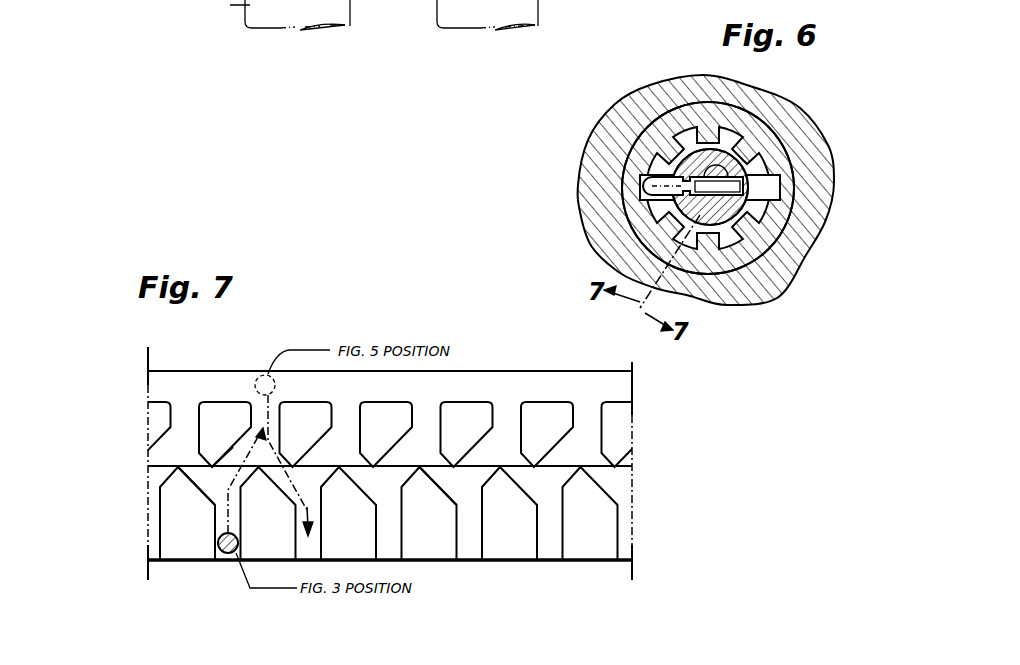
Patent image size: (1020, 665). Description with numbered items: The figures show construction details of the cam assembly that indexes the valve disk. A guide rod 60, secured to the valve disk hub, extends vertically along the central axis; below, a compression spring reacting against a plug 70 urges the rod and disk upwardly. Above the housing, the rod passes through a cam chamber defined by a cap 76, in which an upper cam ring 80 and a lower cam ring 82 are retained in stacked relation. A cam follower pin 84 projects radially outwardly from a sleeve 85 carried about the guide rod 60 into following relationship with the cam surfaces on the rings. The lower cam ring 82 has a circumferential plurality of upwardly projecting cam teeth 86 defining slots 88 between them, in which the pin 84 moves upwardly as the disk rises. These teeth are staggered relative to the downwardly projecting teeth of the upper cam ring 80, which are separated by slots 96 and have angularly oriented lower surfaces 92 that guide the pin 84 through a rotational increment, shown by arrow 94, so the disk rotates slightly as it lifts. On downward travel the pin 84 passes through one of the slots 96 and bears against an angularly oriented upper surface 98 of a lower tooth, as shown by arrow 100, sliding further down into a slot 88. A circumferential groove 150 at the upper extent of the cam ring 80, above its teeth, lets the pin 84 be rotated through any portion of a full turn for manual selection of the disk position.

In FIG. 6, the guide rod 60 is at (793, 255).
In FIG. 6, the plug 70 is at (390, 3).
In FIG. 6, the cap 76 is at (818, 209).
In FIG. 7, the upper cam ring 80 is at (633, 436).
In FIG. 6, the lower cam ring 82 is at (733, 257).
In FIG. 7, the lower cam ring 82 is at (633, 517).
In FIG. 6, the cam follower pin 84 is at (643, 190).
In FIG. 7, the cam follower pin 84 is at (220, 552).
In FIG. 6, the sleeve 85 is at (727, 170).
In FIG. 6, the cam teeth 86 is at (667, 160).
In FIG. 7, the cam teeth 86 is at (170, 550).
In FIG. 6, the slots 88 is at (704, 144).
In FIG. 7, the slots 88 is at (225, 561).
In FIG. 7, the lower surfaces 92 is at (233, 447).
In FIG. 7, the arrow 94 is at (227, 483).
In FIG. 7, the slots 96 is at (280, 394).
In FIG. 7, the upper surface 98 is at (290, 494).
In FIG. 7, the arrow 100 is at (305, 503).
In FIG. 7, the circumferential groove 150 is at (176, 387).